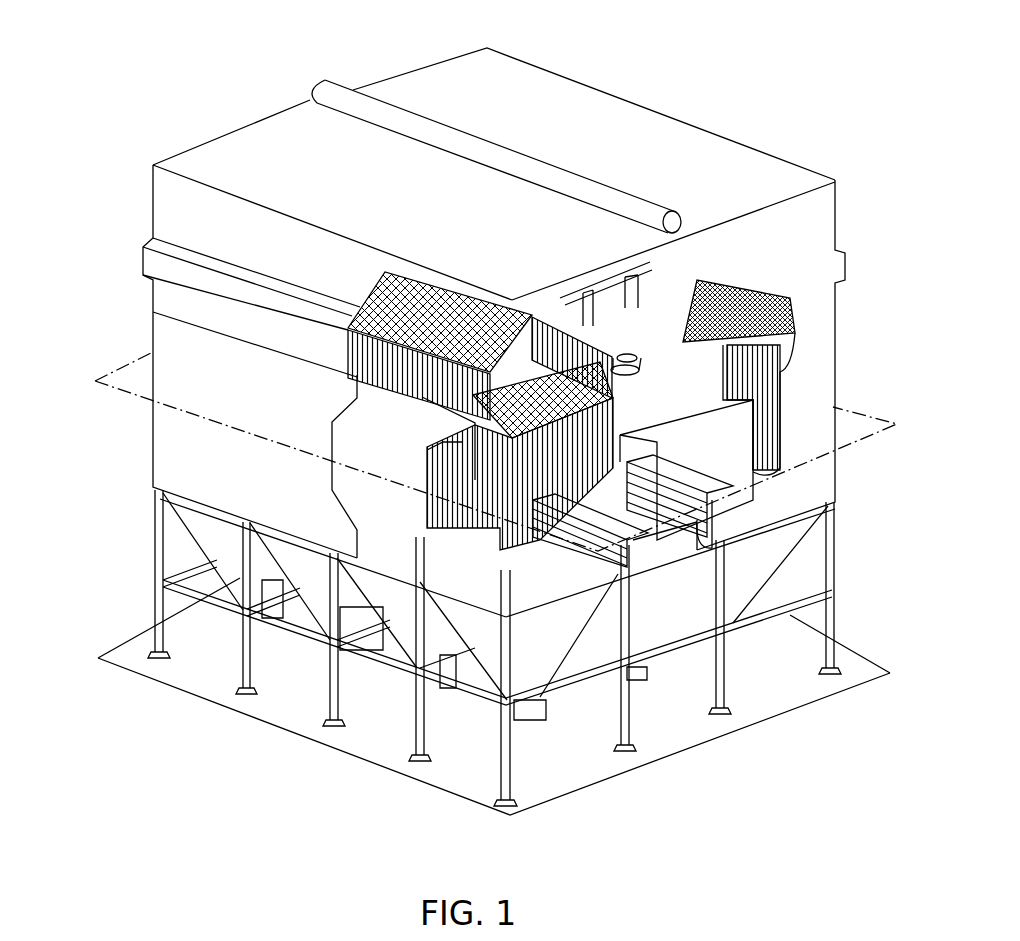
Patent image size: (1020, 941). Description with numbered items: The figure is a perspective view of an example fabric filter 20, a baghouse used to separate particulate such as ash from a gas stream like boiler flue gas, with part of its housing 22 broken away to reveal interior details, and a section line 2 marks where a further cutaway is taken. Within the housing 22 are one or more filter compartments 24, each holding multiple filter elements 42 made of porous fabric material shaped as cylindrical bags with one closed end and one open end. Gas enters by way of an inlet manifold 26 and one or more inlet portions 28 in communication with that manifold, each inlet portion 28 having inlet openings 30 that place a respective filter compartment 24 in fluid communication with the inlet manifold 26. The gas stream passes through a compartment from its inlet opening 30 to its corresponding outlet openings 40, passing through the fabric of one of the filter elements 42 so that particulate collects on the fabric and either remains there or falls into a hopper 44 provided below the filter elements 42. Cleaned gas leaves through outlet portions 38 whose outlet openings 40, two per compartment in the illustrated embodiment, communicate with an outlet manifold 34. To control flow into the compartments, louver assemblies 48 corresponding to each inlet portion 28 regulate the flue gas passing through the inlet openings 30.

The section line 2 is at (118, 365).
The fabric filter 20 is at (469, 279).
The housing 22 is at (507, 62).
The filter compartment 24 is at (420, 590).
The inlet manifold 26 is at (705, 381).
The inlet portion 28 is at (627, 587).
The inlet opening 30 is at (660, 478).
The outlet manifold 34 is at (773, 410).
The outlet portion 38 is at (650, 365).
The outlet opening 40 is at (658, 373).
The filter element 42 is at (458, 380).
The hopper 44 is at (490, 675).
The louver assembly 48 is at (590, 590).